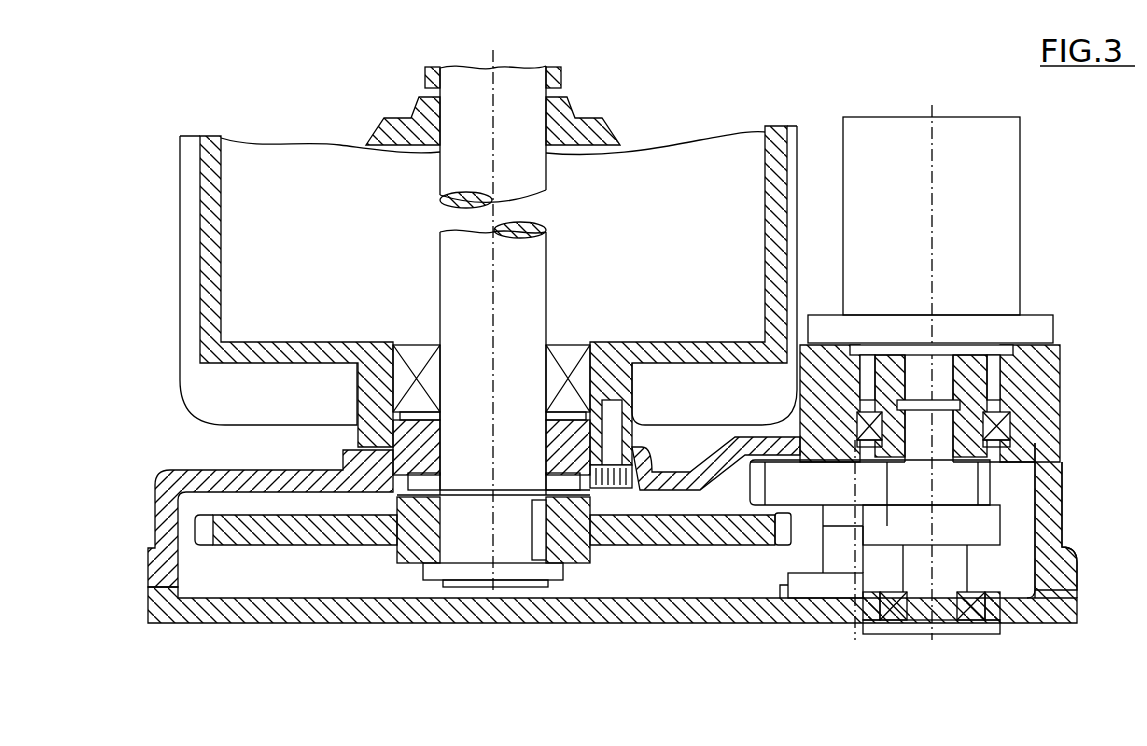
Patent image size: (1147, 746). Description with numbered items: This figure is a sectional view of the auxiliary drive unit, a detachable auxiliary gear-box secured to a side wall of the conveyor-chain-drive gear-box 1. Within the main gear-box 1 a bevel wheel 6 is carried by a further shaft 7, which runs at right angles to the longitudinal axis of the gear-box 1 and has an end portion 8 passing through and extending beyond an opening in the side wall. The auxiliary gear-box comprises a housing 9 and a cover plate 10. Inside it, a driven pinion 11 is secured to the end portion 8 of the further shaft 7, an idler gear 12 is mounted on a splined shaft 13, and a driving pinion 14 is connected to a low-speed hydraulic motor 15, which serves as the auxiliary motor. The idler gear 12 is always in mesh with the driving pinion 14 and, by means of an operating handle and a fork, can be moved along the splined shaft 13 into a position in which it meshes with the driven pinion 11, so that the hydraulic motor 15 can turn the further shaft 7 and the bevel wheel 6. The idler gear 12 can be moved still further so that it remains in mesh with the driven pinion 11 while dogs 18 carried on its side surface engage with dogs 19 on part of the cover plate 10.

The conveyor-chain-drive gear-box 1 is at (204, 190).
The bevel wheel 6 is at (578, 125).
The further shaft 7 is at (528, 280).
The end portion 8 is at (473, 545).
The housing 9 is at (178, 477).
The cover plate 10 is at (643, 610).
The driven pinion 11 is at (287, 530).
The idler gear 12 is at (783, 490).
The splined shaft 13 is at (840, 555).
The driving pinion 14 is at (960, 527).
The low-speed hydraulic motor 15 is at (866, 148).
The dogs 18 is at (813, 517).
The dogs 19 is at (845, 585).